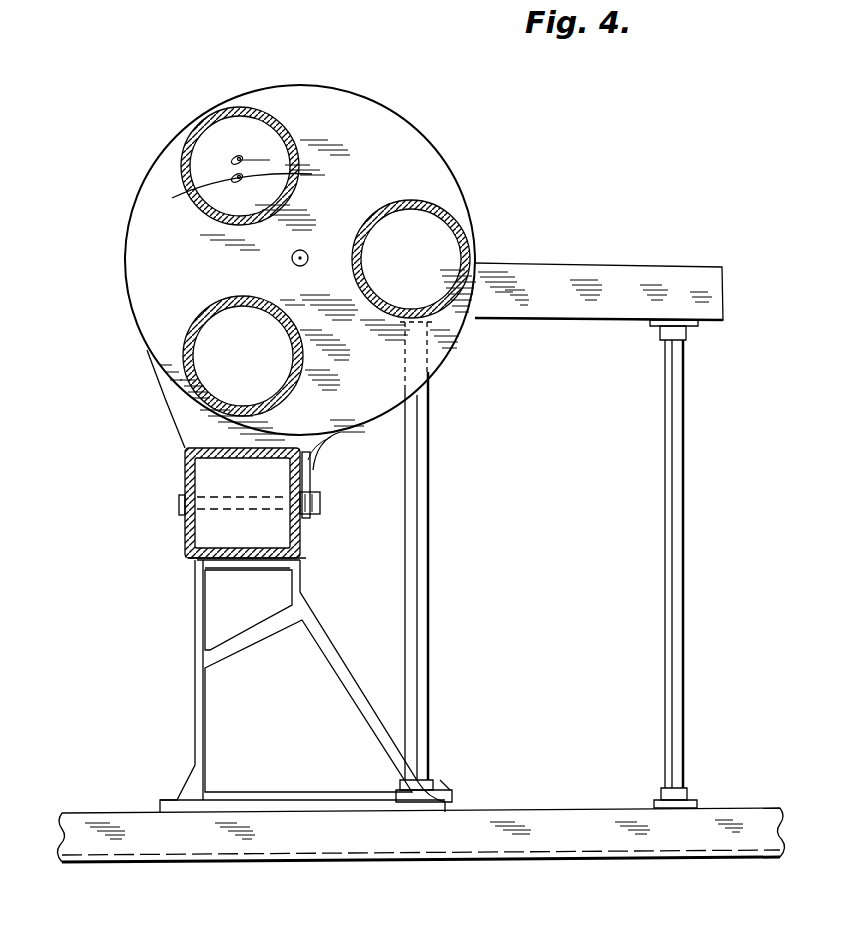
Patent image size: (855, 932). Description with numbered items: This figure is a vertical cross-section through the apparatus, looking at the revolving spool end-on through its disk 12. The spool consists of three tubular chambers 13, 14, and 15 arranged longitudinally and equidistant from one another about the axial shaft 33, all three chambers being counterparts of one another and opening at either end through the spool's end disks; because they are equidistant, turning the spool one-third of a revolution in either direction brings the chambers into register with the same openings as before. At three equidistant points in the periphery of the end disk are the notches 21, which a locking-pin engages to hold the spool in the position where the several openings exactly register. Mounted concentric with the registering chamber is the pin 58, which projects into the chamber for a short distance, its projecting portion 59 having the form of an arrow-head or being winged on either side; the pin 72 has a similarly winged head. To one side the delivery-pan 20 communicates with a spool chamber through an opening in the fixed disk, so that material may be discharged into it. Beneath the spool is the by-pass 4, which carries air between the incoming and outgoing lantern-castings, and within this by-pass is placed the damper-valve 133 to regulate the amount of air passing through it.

The by-pass 4 is at (186, 535).
The disk 12 is at (300, 262).
The tubular chamber 13 is at (411, 259).
The tubular chamber 14 is at (240, 166).
The tubular chamber 15 is at (243, 356).
The delivery-pan 20 is at (580, 272).
The notches 21 is at (301, 82).
The axial shaft 33 is at (300, 266).
The pin 58 is at (172, 194).
The projecting portion 59 is at (192, 188).
The pin 72 is at (257, 181).
The damper-valve 133 is at (280, 482).